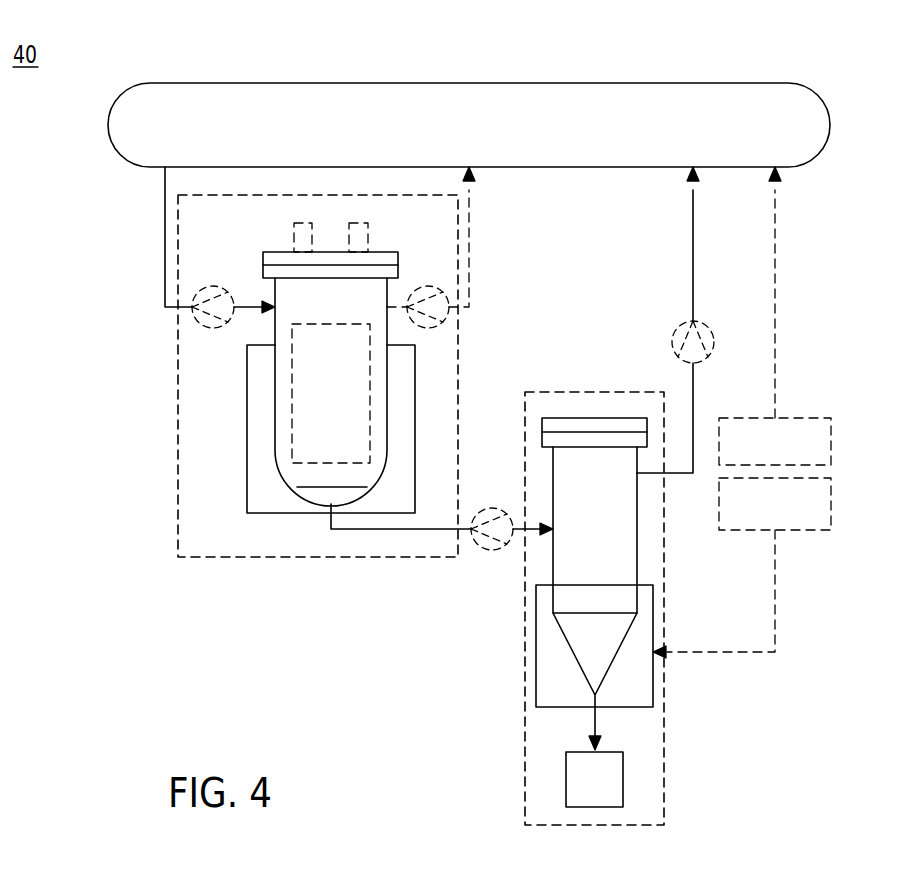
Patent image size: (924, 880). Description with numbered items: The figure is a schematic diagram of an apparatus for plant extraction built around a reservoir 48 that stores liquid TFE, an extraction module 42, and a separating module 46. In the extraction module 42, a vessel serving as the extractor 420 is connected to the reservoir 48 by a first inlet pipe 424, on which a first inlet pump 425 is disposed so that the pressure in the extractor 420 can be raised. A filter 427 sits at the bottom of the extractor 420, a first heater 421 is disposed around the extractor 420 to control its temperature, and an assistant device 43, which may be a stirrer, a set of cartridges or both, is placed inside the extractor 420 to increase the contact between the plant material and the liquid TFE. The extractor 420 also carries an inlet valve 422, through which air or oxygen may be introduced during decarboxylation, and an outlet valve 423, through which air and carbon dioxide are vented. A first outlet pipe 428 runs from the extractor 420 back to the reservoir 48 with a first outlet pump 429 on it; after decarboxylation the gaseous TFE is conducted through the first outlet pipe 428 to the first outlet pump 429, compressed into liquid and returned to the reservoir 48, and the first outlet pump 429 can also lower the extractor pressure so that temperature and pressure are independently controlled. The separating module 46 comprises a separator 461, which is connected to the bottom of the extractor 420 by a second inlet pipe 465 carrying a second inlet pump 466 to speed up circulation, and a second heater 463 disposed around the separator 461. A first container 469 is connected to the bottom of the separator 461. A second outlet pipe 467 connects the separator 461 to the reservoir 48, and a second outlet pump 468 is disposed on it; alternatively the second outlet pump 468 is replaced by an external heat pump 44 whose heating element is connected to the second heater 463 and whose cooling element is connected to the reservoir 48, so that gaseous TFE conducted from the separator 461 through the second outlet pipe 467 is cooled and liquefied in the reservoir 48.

The reservoir 48 is at (770, 84).
The first inlet pipe 424 is at (165, 237).
The first inlet pump 425 is at (195, 300).
The extraction module 42 is at (178, 387).
The inlet valve 422 is at (294, 240).
The outlet valve 423 is at (368, 240).
The assistant device 43 is at (370, 400).
The extractor 420 is at (275, 415).
The first heater 421 is at (247, 468).
The filter 427 is at (315, 489).
The second inlet pipe 465 is at (352, 530).
The second inlet pump 466 is at (488, 548).
The first outlet pipe 428 is at (470, 248).
The first outlet pump 429 is at (440, 295).
The separating module 46 is at (525, 722).
The separator 461 is at (637, 550).
The second outlet pipe 467 is at (693, 292).
The second outlet pump 468 is at (672, 335).
The second heater 463 is at (536, 663).
The first container 469 is at (620, 780).
The external heat pump 44 is at (831, 447).